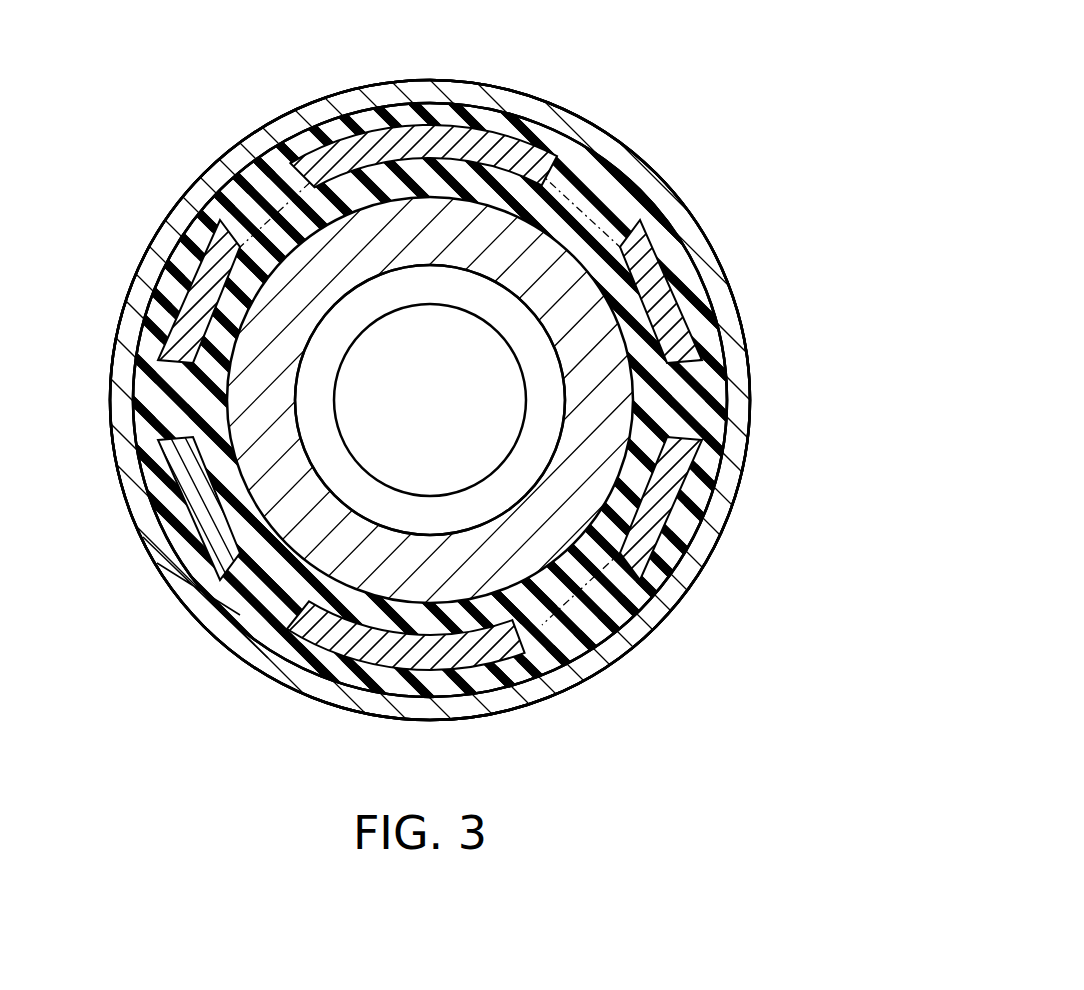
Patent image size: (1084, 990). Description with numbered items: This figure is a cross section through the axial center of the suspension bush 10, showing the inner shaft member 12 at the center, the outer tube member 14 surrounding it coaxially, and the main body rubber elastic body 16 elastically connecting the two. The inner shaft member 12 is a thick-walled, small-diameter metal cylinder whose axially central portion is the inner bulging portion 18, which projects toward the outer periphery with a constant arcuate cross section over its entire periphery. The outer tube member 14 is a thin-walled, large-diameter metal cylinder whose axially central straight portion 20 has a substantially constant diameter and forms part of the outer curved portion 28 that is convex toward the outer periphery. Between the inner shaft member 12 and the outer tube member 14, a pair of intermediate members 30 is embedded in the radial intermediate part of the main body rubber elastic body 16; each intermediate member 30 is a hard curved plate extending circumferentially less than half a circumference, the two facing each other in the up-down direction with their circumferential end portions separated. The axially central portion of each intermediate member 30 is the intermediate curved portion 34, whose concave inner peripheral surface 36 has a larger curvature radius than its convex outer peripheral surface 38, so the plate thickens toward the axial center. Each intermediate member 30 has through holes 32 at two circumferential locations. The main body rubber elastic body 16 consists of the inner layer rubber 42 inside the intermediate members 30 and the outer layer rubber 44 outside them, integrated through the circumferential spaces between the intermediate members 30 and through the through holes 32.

The suspension bush 10 is at (684, 104).
The inner shaft member 12 is at (565, 237).
The outer tube member 14 is at (754, 292).
The main body rubber elastic body 16 is at (128, 345).
The inner bulging portion 18 is at (592, 333).
The straight portion 20 is at (735, 449).
The outer curved portion 28 is at (757, 388).
The intermediate member 30 is at (457, 117).
The through hole 32 is at (228, 212).
The intermediate curved portion 34 is at (348, 152).
The inner peripheral surface 36 is at (480, 172).
The outer peripheral surface 38 is at (403, 123).
The inner layer rubber 42 is at (215, 465).
The outer layer rubber 44 is at (178, 548).